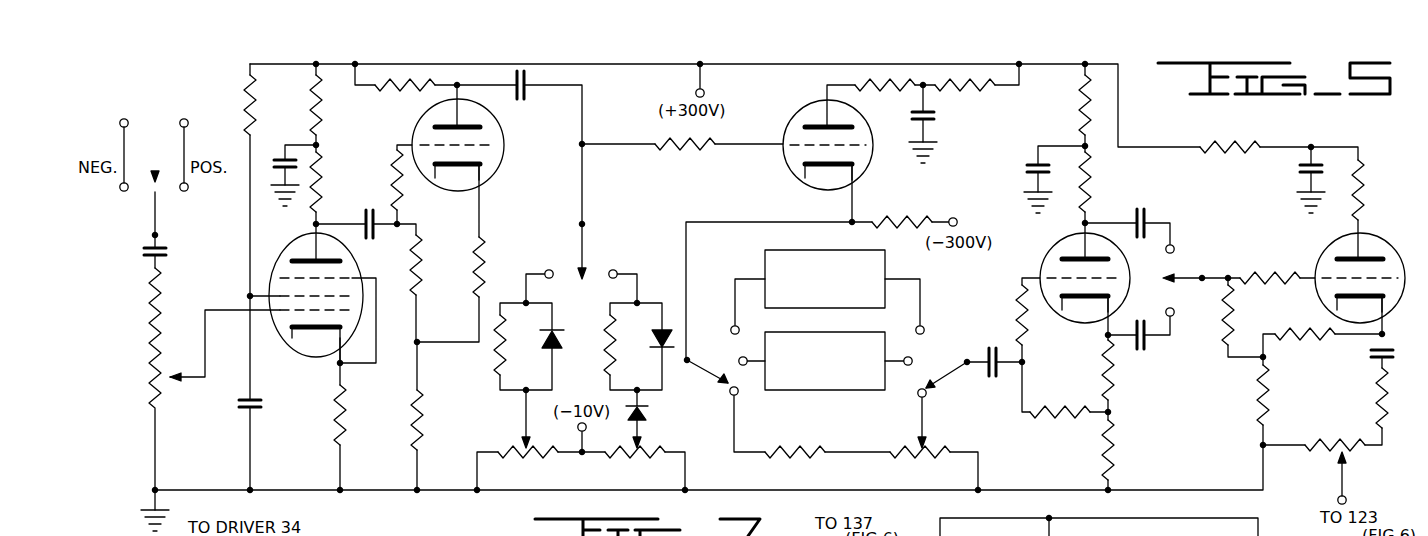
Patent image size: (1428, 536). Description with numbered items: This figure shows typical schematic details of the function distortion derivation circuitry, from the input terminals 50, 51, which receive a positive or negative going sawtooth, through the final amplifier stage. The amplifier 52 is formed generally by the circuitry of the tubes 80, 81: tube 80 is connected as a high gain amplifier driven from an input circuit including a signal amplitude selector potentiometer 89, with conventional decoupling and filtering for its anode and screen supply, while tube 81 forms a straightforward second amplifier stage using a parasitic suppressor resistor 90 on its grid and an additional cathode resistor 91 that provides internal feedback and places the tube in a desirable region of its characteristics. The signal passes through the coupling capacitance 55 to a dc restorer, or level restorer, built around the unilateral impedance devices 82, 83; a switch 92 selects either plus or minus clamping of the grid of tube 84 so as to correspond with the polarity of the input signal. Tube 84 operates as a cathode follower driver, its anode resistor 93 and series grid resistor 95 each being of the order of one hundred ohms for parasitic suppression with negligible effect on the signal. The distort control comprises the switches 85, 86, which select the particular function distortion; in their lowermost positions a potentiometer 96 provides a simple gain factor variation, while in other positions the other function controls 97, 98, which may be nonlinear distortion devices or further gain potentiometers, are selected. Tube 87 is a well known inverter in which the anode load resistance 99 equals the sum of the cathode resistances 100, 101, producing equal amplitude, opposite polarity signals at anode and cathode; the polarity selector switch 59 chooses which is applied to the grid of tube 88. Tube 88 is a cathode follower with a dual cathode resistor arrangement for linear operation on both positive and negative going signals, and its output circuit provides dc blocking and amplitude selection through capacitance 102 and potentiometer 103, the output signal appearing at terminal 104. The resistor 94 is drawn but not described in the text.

The input terminal 50 is at (188, 121).
The input terminal 51 is at (120, 121).
The amplifier 52 is at (157, 214).
The coupling capacitance 55 is at (527, 92).
The polarity selector switch 59 is at (1177, 271).
The tube 80 is at (293, 250).
The tube 81 is at (495, 172).
The unilateral impedance device 82 is at (545, 330).
The unilateral impedance device 83 is at (654, 351).
The tube 84 is at (790, 175).
The switch 85 is at (717, 385).
The switch 86 is at (947, 380).
The tube 87 is at (1076, 324).
The tube 88 is at (1326, 256).
The signal amplitude selector potentiometer 89 is at (152, 376).
The parasitic suppressor resistor 90 is at (396, 175).
The cathode resistor 91 is at (420, 411).
The switch 92 is at (583, 264).
The anode resistor 93 is at (867, 92).
The resistor 94 is at (904, 213).
The series grid resistor 95 is at (688, 158).
The potentiometer 96 is at (917, 462).
The other function control 97 is at (797, 250).
The other function control 98 is at (800, 334).
The anode load resistance 99 is at (1090, 194).
The cathode resistance 100 is at (1112, 386).
The cathode resistance 101 is at (1112, 452).
The capacitance 102 is at (1366, 354).
The potentiometer 103 is at (1338, 439).
The output terminal 104 is at (1344, 498).